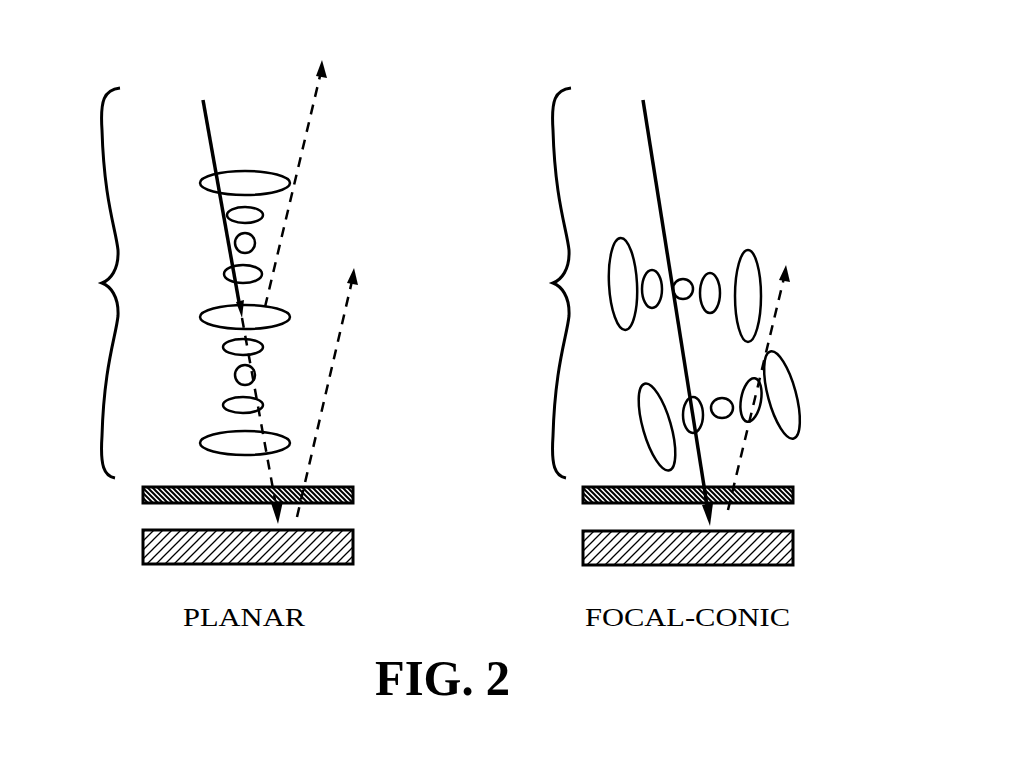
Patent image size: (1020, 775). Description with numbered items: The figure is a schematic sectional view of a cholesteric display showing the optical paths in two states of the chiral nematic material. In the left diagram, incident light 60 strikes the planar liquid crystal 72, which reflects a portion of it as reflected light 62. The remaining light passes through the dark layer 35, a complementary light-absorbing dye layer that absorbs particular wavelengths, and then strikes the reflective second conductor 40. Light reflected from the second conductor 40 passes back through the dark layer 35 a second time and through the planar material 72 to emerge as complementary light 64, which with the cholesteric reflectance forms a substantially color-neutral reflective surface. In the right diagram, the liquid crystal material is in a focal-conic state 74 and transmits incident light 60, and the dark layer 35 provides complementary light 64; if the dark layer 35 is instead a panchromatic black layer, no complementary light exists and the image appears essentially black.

The dark layer 35 is at (143, 497).
The second conductor 40 is at (143, 555).
The incident light 60 is at (205, 118).
The reflected light 62 is at (308, 117).
The complementary light 64 is at (343, 333).
The planar liquid crystal 72 is at (85, 283).
The focal-conic state 74 is at (537, 283).